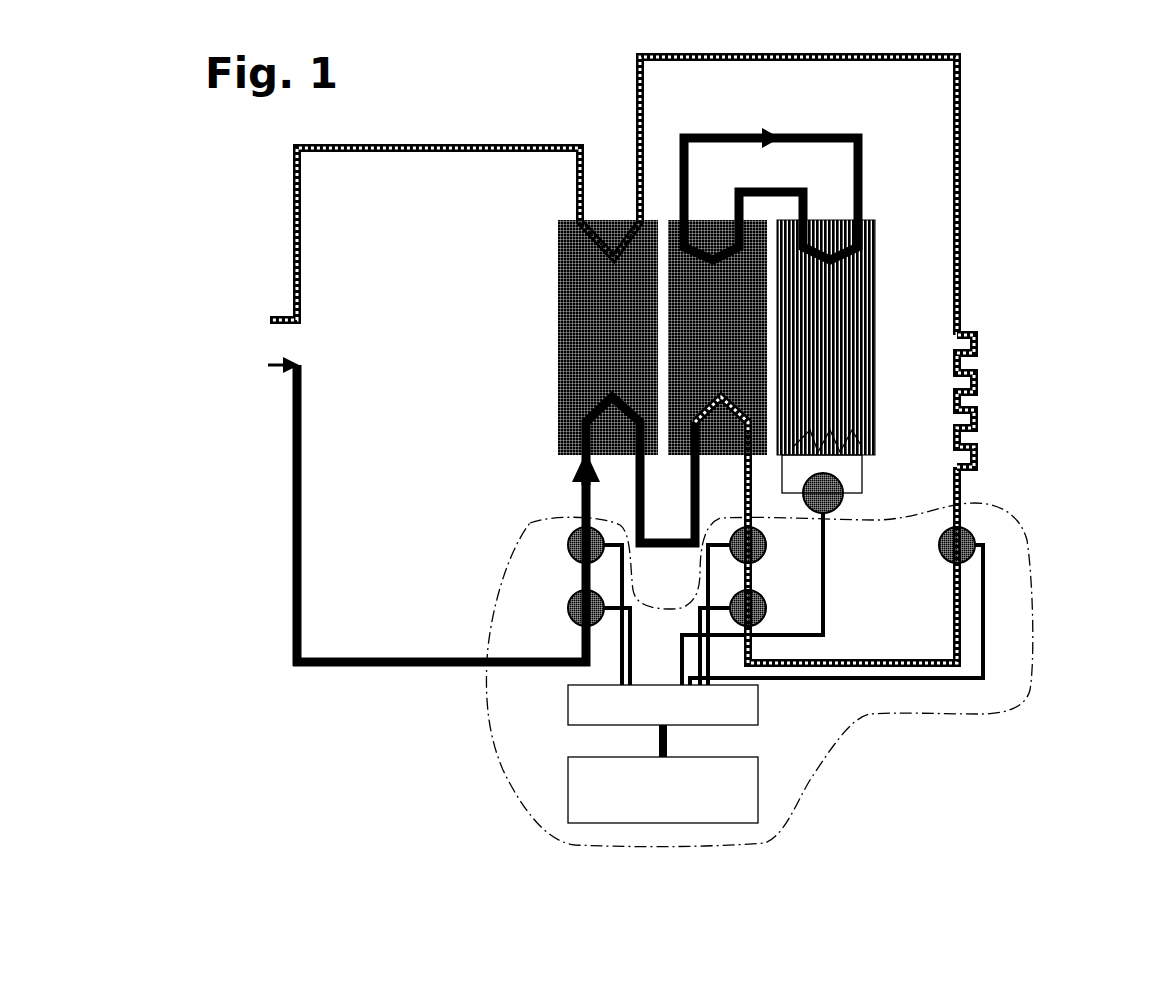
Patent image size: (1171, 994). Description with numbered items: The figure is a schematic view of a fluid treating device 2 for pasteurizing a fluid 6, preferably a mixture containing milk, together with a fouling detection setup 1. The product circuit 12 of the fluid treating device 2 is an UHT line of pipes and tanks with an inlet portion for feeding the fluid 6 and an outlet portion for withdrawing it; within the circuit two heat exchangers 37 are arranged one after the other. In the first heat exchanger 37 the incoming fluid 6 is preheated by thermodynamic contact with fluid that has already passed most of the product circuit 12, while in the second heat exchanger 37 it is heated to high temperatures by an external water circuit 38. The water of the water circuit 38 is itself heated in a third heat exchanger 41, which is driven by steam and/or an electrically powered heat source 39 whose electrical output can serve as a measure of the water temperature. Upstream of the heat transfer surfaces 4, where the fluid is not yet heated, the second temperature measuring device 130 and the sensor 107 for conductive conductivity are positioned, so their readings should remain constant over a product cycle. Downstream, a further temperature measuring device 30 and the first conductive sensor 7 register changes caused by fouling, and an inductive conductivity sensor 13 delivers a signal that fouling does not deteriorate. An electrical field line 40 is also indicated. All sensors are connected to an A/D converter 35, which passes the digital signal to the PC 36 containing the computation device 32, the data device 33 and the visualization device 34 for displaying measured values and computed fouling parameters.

The fouling detection setup 1 is at (496, 730).
The fluid treating device 2 is at (230, 166).
The heat transfer surfaces 4 is at (707, 395).
The fluid 6 is at (233, 346).
The sensor 7 is at (766, 612).
The product circuit 12 is at (293, 462).
The inductive conductivity sensor 13 is at (968, 533).
The temperature measuring device 30 is at (766, 552).
The computation device 32 is at (848, 793).
The data device 33 is at (848, 793).
The visualization device 34 is at (848, 793).
The A/D converter 35 is at (760, 718).
The PC 36 is at (760, 785).
The heat exchanger 37 is at (668, 335).
The water circuit 38 is at (860, 170).
The heat generating element 39 is at (977, 460).
The electrical field line 40 is at (388, 652).
The heat exchanger 41 is at (877, 347).
The sensor 107 is at (567, 603).
The temperature measuring device 130 is at (567, 540).